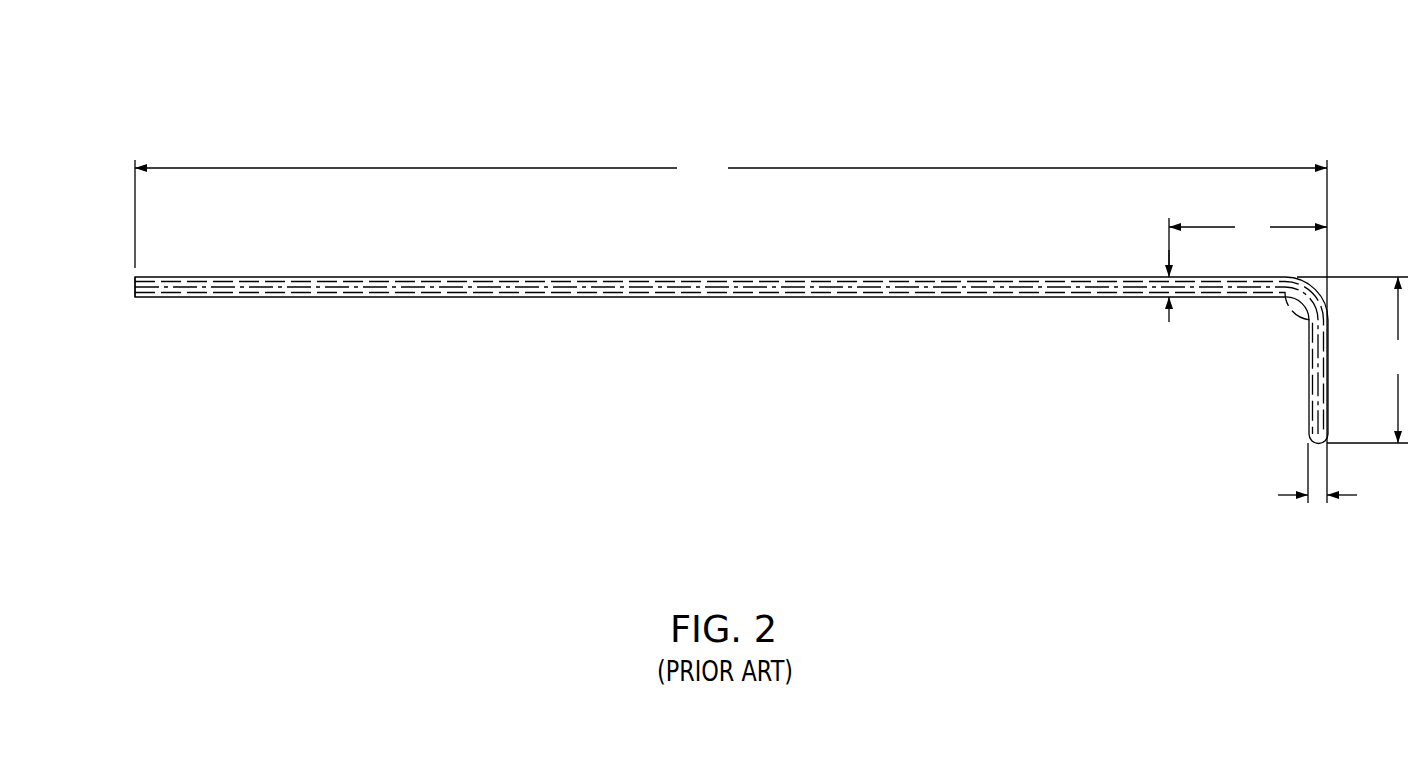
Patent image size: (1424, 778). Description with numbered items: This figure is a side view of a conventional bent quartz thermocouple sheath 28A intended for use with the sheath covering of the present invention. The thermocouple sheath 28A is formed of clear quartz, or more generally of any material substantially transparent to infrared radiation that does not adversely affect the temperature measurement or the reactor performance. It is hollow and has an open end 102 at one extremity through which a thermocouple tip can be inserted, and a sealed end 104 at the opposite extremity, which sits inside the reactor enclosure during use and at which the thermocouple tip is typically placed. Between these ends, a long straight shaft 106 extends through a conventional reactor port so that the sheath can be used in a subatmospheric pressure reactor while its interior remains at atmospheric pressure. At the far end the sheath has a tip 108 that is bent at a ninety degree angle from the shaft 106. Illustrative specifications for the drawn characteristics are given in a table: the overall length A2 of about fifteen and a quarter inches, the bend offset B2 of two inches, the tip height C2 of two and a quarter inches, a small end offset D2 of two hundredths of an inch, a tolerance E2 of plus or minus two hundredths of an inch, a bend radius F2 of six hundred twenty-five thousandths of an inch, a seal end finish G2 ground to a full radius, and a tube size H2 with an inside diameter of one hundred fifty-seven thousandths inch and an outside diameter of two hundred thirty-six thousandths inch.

The thermocouple sheath 28A is at (577, 78).
The open end 102 is at (135, 297).
The sealed end 104 is at (1310, 442).
The shaft 106 is at (687, 300).
The tip 108 is at (1308, 383).
The overall length characteristic A2 is at (731, 327).
The bend offset characteristic B2 is at (1248, 242).
The tip height characteristic C2 is at (1354, 360).
The end offset characteristic D2 is at (1334, 477).
The tolerance characteristic E2 is at (1168, 306).
The bend radius characteristic F2 is at (1302, 303).
The seal end finish characteristic G2 is at (1309, 445).
The tube diameter characteristic H2 is at (423, 300).